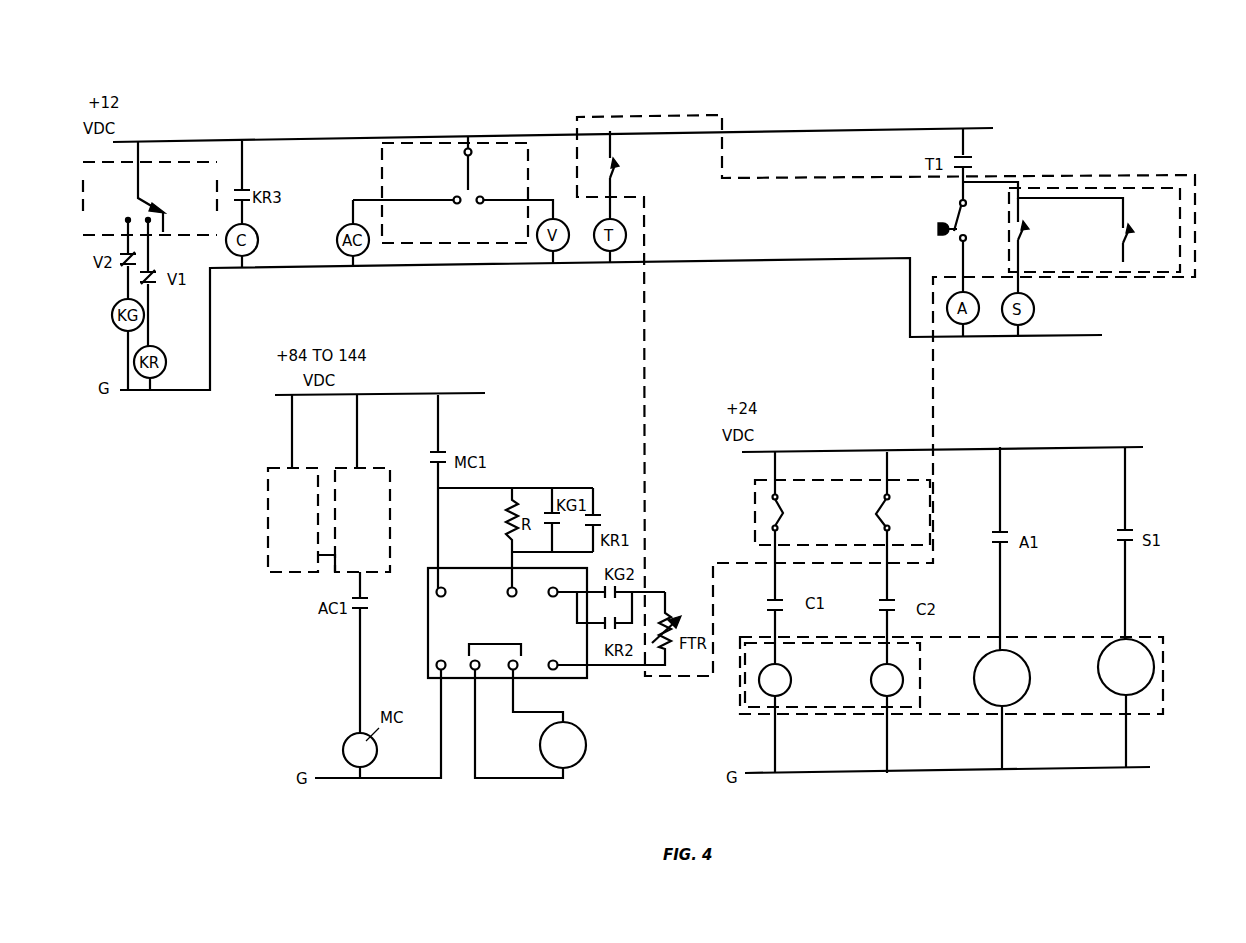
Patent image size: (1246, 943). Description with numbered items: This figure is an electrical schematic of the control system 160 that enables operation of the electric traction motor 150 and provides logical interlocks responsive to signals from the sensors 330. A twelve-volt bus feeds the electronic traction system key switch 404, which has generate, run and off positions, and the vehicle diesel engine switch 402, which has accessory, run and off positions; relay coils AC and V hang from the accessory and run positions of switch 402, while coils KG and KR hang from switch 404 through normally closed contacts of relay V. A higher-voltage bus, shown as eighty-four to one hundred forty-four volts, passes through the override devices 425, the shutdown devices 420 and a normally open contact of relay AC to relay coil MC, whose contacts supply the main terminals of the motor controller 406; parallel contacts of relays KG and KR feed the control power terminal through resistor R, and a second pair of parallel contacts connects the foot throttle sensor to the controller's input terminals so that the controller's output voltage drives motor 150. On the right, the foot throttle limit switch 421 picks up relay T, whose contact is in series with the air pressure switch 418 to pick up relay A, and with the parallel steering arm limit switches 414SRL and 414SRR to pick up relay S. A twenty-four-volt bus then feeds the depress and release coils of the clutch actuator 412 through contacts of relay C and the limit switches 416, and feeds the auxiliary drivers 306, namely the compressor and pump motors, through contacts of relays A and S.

The control system 160 is at (1083, 118).
The electronic traction system key switch 404 is at (192, 160).
The vehicle diesel engine switch 402 is at (383, 152).
The foot throttle limit switch 421 is at (650, 175).
The air pressure switch 418 is at (938, 228).
The steering arm limit switch 414SRL is at (1024, 233).
The steering arm limit switch 414SRR is at (1132, 232).
The sensors 330 is at (644, 336).
The override devices 425 is at (293, 483).
The shutdown devices 420 is at (354, 483).
The limit switches 416 is at (760, 538).
The motor controller 406 is at (580, 679).
The electric traction motor 150 is at (530, 723).
The clutch actuator 412 is at (832, 675).
The auxiliary drivers 306 is at (951, 656).